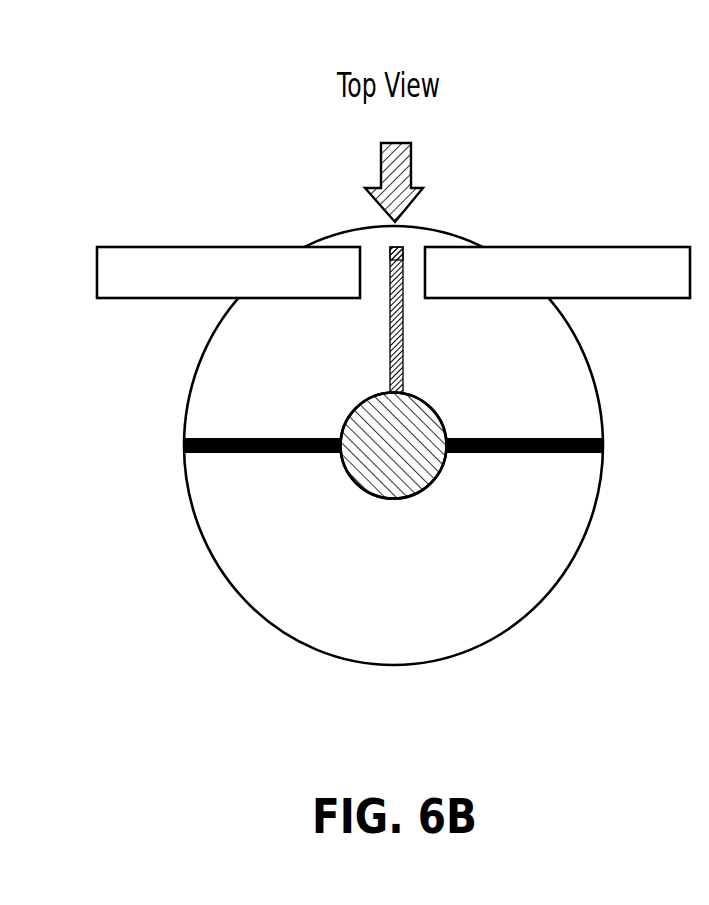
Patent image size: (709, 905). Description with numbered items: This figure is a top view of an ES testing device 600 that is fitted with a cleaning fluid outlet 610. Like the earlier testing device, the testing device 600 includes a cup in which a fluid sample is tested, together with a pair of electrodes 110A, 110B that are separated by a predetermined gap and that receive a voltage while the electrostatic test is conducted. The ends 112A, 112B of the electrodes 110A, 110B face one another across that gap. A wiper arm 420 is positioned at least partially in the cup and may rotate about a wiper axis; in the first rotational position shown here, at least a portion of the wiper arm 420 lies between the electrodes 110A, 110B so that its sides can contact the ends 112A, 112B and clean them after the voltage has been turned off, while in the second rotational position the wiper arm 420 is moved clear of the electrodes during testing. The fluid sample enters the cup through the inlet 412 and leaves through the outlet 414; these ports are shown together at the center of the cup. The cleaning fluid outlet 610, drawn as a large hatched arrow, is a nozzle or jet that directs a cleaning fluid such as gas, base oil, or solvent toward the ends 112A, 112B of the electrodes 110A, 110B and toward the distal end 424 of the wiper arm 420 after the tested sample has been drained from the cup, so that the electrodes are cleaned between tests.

The ES testing device 600 is at (246, 80).
The cleaning fluid outlet 610 is at (380, 173).
The distal end of the wiper 424 is at (403, 246).
The end of the first electrode 112A is at (361, 262).
The end of the second electrode 112B is at (426, 258).
The first electrode 110A is at (140, 247).
The second electrode 110B is at (623, 247).
The wiper arm 420 is at (446, 320).
The inlet 412 is at (407, 501).
The outlet 414 is at (394, 446).